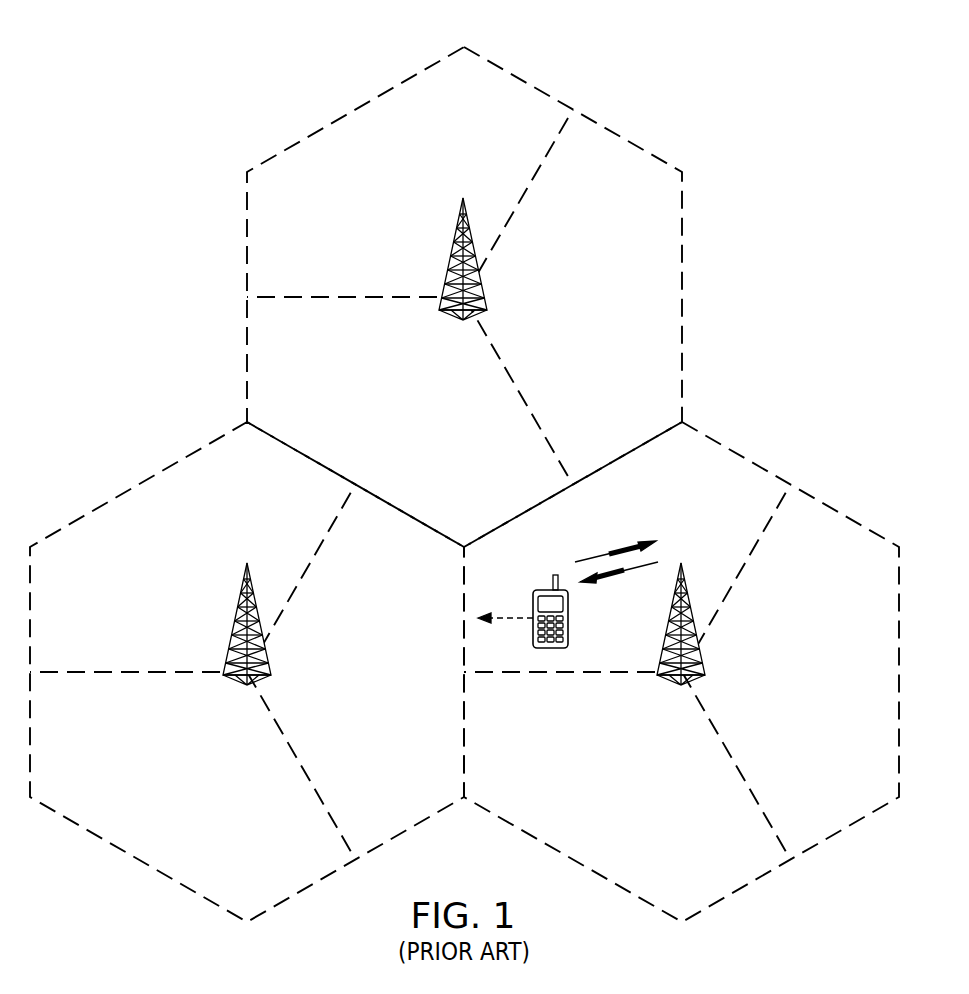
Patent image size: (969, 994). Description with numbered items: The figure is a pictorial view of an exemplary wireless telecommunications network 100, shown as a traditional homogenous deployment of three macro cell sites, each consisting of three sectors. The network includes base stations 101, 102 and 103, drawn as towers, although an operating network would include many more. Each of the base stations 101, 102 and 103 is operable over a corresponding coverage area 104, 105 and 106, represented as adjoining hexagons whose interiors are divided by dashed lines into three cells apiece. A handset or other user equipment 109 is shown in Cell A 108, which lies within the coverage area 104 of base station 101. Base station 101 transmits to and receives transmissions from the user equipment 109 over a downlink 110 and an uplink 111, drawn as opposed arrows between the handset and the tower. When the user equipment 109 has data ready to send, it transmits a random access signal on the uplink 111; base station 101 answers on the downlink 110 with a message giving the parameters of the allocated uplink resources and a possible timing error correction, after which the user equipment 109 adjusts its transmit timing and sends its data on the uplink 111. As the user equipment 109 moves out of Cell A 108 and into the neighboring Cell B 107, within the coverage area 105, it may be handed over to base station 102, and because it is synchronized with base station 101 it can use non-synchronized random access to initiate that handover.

The wireless telecommunications network 100 is at (247, 57).
The base station 101 is at (667, 683).
The base station 102 is at (232, 622).
The base station 103 is at (447, 262).
The coverage area 104 is at (755, 882).
The coverage area 105 is at (150, 866).
The coverage area 106 is at (606, 126).
The Cell B 107 is at (397, 708).
The Cell A 108 is at (662, 522).
The user equipment 109 is at (536, 590).
The downlink 110 is at (614, 582).
The uplink 111 is at (612, 556).